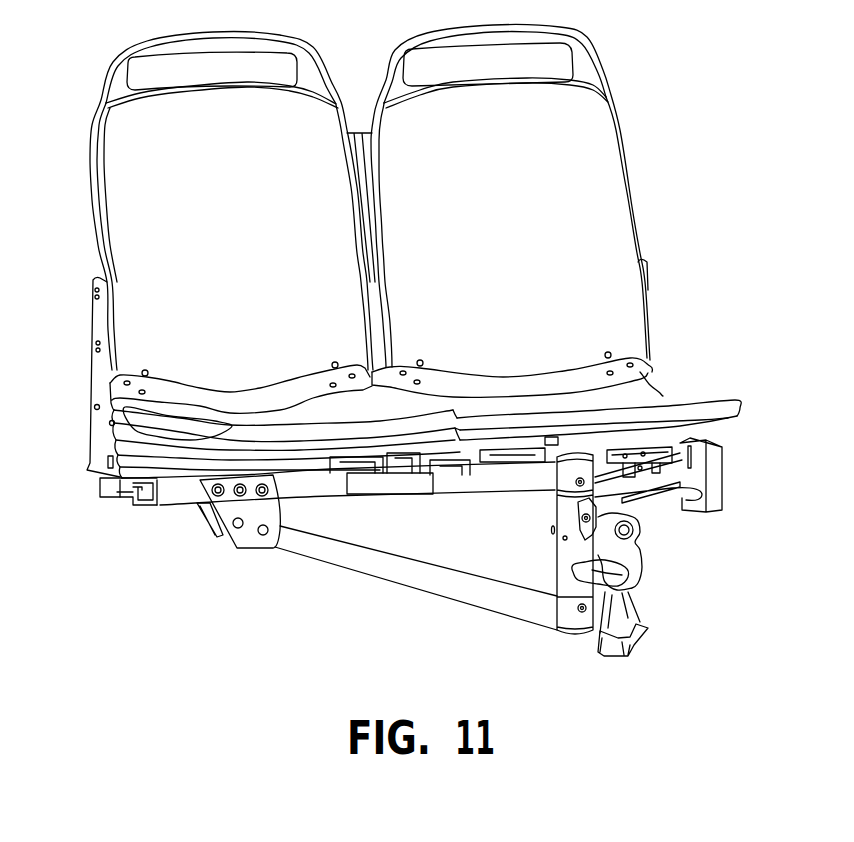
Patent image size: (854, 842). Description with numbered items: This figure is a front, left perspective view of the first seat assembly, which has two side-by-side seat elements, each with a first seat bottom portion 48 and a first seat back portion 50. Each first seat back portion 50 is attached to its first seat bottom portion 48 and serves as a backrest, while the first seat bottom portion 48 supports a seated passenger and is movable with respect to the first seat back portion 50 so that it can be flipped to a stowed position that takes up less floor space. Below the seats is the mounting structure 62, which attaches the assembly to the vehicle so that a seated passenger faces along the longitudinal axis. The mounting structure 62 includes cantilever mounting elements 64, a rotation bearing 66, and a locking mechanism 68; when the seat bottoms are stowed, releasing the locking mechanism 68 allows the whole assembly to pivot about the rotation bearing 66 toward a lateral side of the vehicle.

The first seat bottom portion 48 is at (628, 402).
The first seat back portion 50 is at (229, 221).
The mounting structure 62 is at (496, 480).
The cantilever mounting elements 64 is at (708, 478).
The rotation bearing 66 is at (560, 555).
The locking mechanism 68 is at (633, 575).